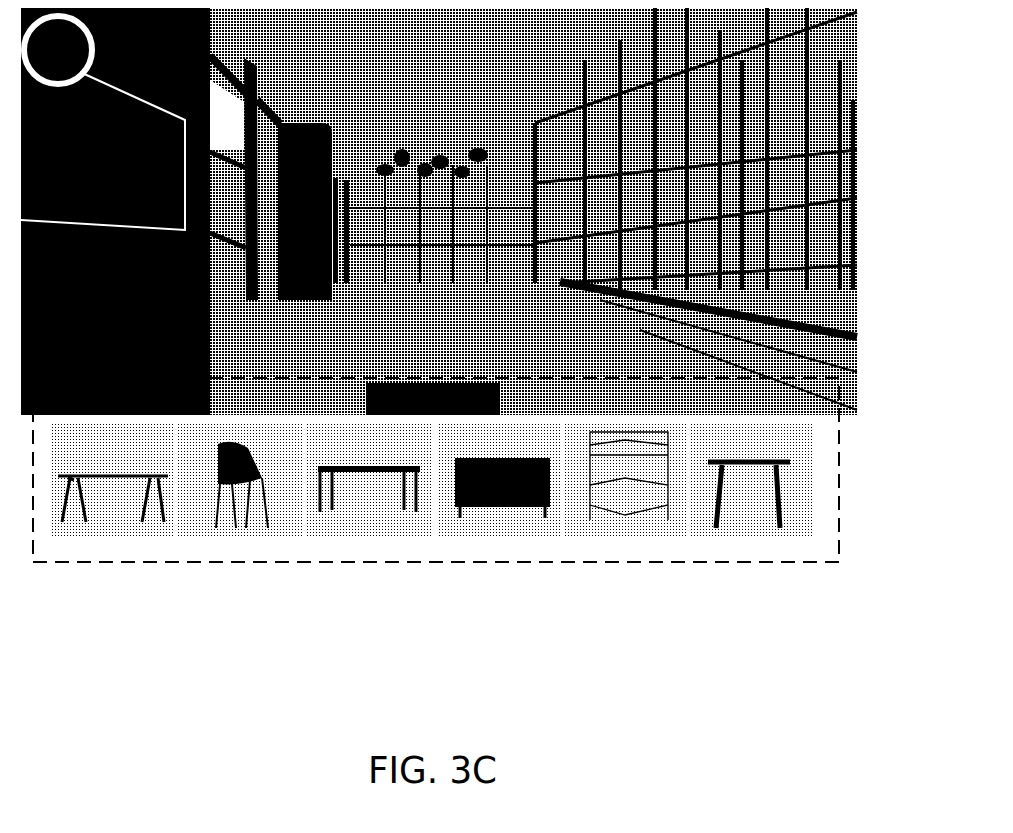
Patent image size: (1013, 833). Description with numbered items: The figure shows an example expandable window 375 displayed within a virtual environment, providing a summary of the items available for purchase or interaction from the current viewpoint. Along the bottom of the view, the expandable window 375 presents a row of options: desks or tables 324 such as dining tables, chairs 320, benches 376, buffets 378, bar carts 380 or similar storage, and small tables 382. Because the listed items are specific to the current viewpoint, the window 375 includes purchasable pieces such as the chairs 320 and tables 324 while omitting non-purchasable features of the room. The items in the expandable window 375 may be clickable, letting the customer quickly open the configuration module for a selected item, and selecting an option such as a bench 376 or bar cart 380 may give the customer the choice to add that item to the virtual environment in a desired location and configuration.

The expandable window 375 is at (840, 506).
The desks or tables 324 is at (110, 553).
The chairs 320 is at (238, 553).
The benches 376 is at (392, 553).
The buffets 378 is at (515, 553).
The bar carts 380 is at (657, 553).
The small tables 382 is at (797, 553).